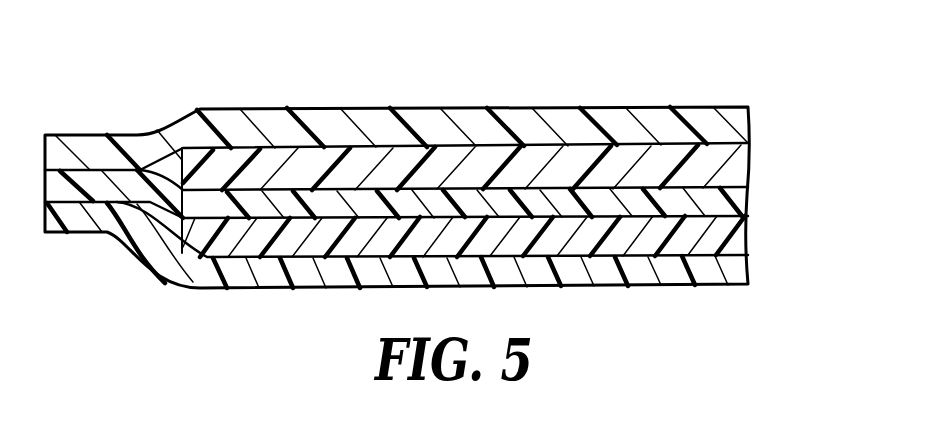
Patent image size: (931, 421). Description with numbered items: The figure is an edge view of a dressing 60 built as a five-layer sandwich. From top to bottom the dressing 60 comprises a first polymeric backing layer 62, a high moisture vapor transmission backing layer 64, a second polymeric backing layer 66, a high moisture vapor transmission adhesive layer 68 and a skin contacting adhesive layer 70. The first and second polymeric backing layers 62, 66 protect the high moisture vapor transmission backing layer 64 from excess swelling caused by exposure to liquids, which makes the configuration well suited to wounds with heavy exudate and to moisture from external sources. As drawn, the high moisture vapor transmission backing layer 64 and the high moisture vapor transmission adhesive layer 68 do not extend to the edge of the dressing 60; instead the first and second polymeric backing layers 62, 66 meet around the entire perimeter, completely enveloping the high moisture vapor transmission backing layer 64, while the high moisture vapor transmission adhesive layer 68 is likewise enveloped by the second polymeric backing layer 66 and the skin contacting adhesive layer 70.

The dressing 60 is at (431, 195).
The first polymeric backing layer 62 is at (740, 121).
The high moisture vapor transmission backing layer 64 is at (742, 165).
The second polymeric backing layer 66 is at (747, 197).
The high moisture vapor transmission adhesive layer 68 is at (737, 240).
The skin contacting adhesive layer 70 is at (725, 273).